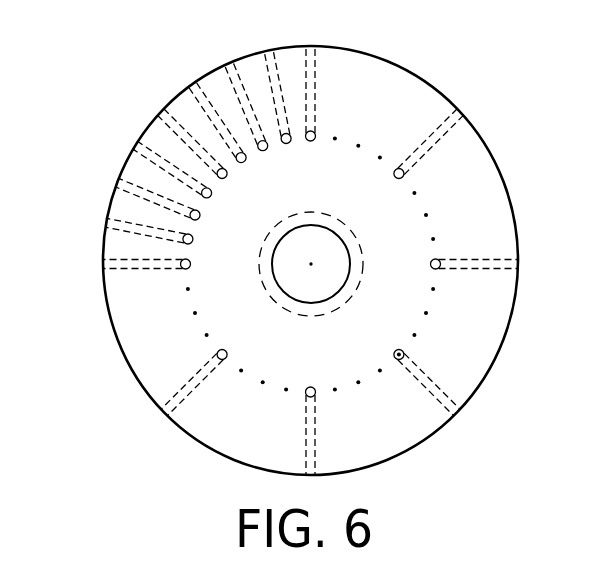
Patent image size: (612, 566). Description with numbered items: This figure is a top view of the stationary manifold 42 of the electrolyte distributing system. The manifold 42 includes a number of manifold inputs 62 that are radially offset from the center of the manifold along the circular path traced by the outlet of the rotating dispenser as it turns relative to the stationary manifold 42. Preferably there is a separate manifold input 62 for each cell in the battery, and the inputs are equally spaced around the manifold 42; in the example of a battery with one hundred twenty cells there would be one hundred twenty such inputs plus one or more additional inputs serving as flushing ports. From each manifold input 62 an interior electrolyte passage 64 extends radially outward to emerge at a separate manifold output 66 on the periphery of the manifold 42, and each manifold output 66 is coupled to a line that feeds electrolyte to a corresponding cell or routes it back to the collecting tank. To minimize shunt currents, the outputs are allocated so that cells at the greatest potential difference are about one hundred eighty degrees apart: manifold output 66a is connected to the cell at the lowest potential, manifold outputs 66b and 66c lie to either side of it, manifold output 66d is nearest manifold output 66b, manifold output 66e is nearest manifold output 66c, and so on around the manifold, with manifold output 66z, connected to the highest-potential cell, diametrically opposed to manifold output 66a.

The stationary manifold 42 is at (421, 99).
The manifold input 62 is at (403, 175).
The interior electrolyte passage 64 is at (477, 268).
The manifold output 66 is at (456, 111).
The manifold output 66a is at (162, 110).
The manifold output 66b is at (137, 144).
The manifold output 66c is at (193, 83).
The manifold output 66d is at (118, 182).
The manifold output 66e is at (230, 60).
The manifold output 66z is at (457, 414).